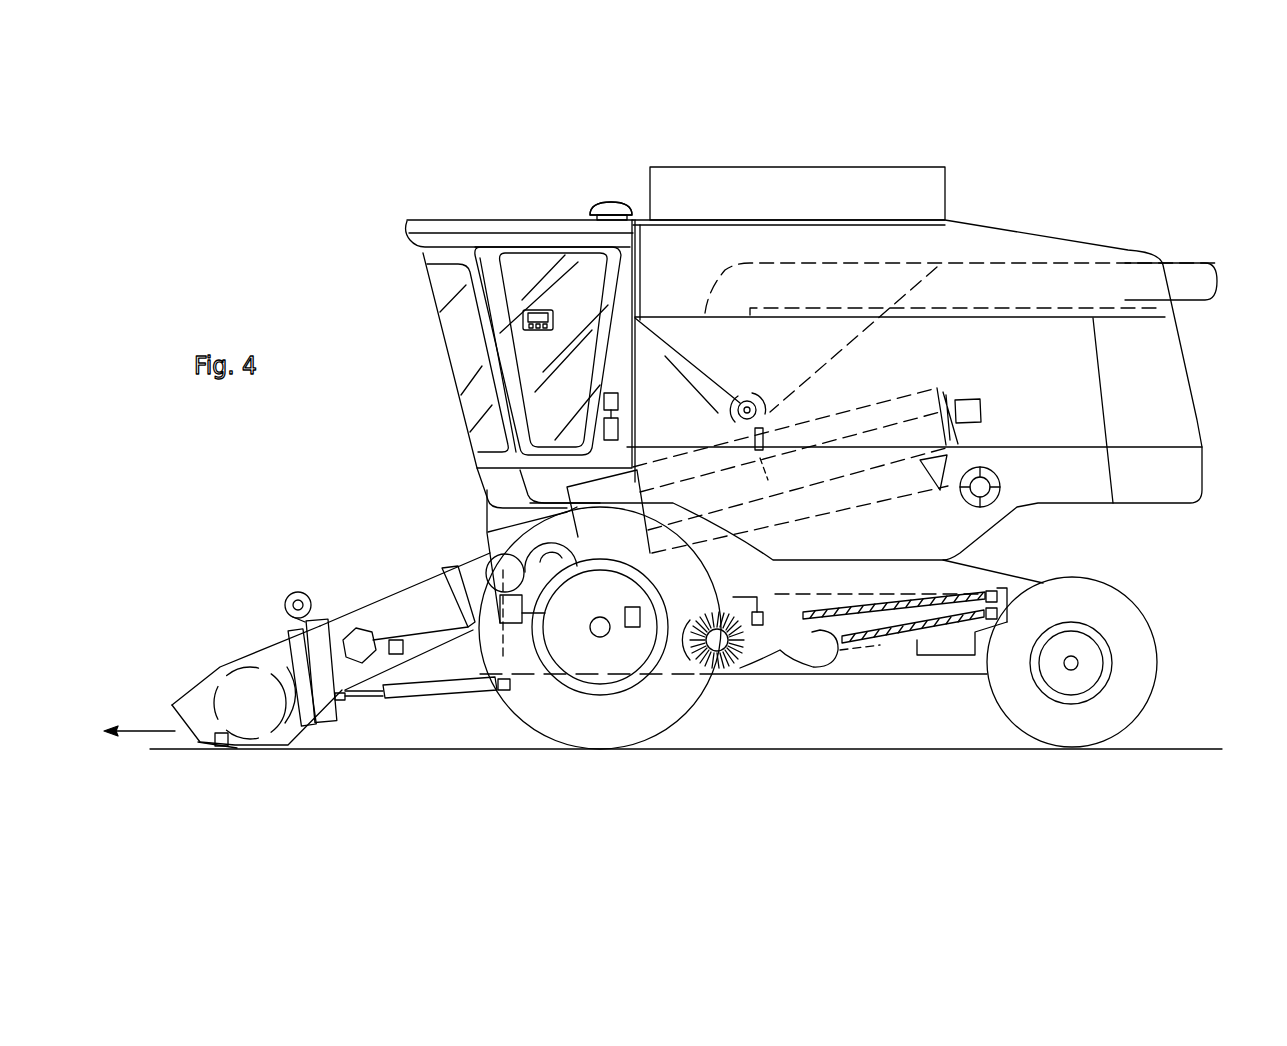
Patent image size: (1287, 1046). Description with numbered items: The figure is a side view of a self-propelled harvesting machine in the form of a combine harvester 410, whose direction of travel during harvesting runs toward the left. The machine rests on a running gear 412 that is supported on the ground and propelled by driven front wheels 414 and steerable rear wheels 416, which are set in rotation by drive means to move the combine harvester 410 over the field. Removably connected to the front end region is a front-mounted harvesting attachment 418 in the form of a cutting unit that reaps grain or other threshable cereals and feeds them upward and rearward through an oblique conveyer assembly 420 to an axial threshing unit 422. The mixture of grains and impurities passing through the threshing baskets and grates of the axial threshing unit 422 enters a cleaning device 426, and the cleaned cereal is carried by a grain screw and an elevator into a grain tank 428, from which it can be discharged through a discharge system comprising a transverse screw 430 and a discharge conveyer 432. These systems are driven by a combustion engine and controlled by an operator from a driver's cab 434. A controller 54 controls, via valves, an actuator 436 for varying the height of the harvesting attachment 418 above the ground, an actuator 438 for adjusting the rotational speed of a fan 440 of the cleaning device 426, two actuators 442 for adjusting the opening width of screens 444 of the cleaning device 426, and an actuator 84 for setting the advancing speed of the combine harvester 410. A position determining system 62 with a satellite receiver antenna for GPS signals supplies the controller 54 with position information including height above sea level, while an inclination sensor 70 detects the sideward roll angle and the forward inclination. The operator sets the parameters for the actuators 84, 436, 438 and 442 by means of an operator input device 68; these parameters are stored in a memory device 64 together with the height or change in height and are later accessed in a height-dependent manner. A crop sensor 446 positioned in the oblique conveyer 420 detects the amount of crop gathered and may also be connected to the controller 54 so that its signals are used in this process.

The combine harvester 410 is at (1075, 181).
The running gear 412 is at (866, 676).
The front wheels 414 is at (650, 735).
The rear wheels 416 is at (1113, 708).
The front-mounted harvesting attachment 418 is at (238, 646).
The oblique conveyer assembly 420 is at (431, 577).
The axial threshing unit 422 is at (850, 408).
The cleaning device 426 is at (885, 648).
The grain tank 428 is at (689, 286).
The transverse screw 430 is at (760, 400).
The discharge conveyer 432 is at (1125, 280).
The driver's cab 434 is at (518, 220).
The actuator 436 is at (415, 694).
The actuator 438 is at (757, 597).
The fan 440 is at (768, 652).
The actuators 442 is at (1000, 607).
The screens 444 is at (937, 627).
The crop sensor 446 is at (392, 640).
The controller 54 is at (618, 400).
The position determining system 62 is at (617, 202).
The inclination sensor 70 is at (611, 208).
The memory device 64 is at (618, 428).
The operator input device 68 is at (553, 318).
The actuator 84 is at (633, 627).